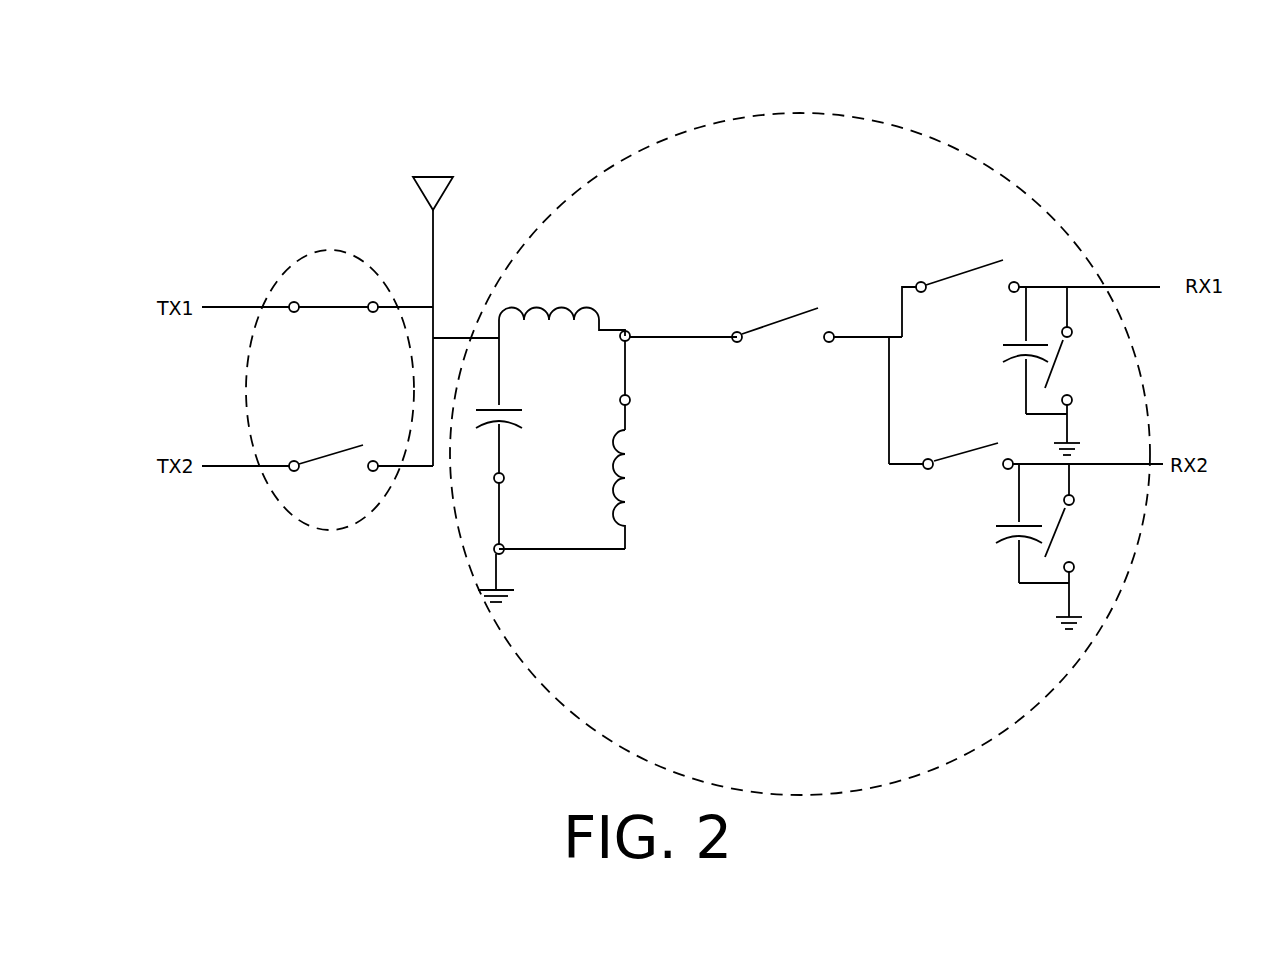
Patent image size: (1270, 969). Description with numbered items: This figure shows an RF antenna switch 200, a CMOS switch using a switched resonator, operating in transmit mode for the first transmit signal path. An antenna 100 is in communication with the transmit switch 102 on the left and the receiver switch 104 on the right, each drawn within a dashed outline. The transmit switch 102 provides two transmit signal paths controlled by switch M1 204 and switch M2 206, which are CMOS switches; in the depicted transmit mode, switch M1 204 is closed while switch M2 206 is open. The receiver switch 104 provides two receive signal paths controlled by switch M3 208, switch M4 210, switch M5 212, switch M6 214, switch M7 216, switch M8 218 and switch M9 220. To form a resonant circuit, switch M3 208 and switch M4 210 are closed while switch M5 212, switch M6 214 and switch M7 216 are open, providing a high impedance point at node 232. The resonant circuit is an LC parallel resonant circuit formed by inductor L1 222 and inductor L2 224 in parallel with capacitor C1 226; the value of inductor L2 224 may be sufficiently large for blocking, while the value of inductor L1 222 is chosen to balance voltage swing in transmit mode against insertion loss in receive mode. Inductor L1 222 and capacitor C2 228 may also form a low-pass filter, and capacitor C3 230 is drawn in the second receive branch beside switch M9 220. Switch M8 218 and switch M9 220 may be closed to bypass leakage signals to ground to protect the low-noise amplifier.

The antenna 100 is at (435, 176).
The transmit switch 102 is at (298, 258).
The receiver switch 104 is at (783, 112).
The RF antenna switch 200 is at (1106, 158).
The switch M1 204 is at (336, 312).
The switch M2 206 is at (331, 470).
The switch M3 208 is at (502, 518).
The switch M4 210 is at (628, 373).
The switch M5 212 is at (790, 312).
The switch M6 214 is at (977, 262).
The switch M7 216 is at (967, 458).
The switch M8 218 is at (1046, 354).
The switch M9 220 is at (1046, 553).
The inductor L1 222 is at (556, 306).
The inductor L2 224 is at (627, 482).
The capacitor C1 226 is at (536, 408).
The capacitor C2 228 is at (998, 350).
The capacitor C3 230 is at (995, 523).
The node 232 is at (629, 331).